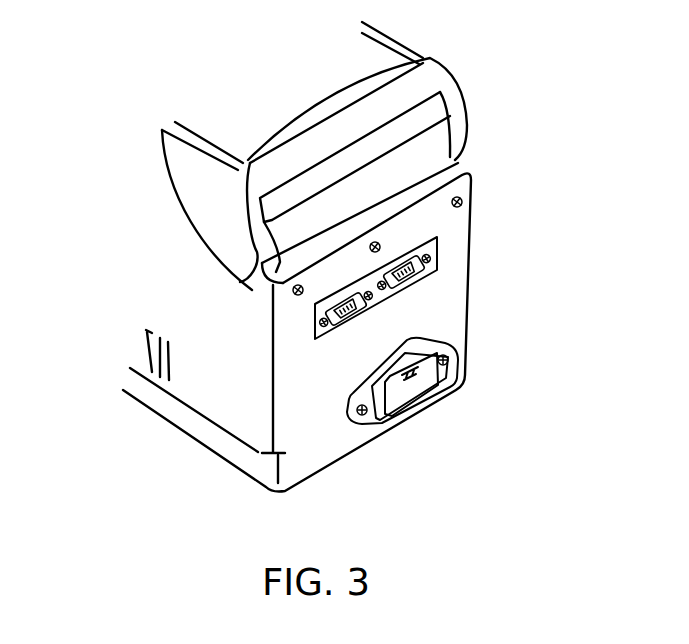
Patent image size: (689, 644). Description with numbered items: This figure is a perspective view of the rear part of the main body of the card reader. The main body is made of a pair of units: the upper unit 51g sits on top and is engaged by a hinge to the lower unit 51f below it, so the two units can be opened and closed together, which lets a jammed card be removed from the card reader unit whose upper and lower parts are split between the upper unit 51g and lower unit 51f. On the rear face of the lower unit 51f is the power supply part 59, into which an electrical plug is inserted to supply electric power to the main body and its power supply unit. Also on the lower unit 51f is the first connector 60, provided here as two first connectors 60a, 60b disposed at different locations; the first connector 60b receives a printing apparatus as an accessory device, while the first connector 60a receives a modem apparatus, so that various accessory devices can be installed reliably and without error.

The upper unit 51g is at (440, 82).
The lower unit 51f is at (467, 223).
The first connector 60 is at (303, 330).
The first connector 60a is at (330, 328).
The first connector 60b is at (425, 284).
The power supply part 59 is at (422, 402).